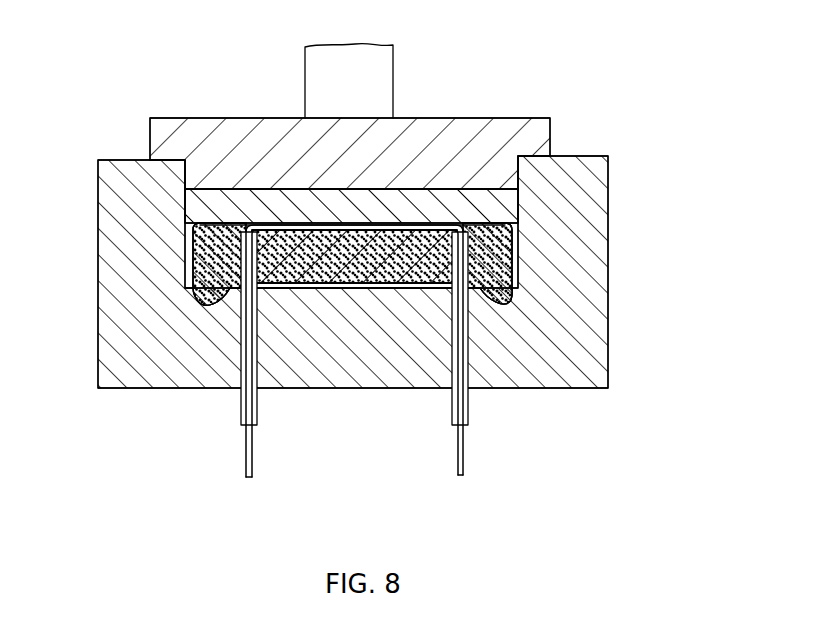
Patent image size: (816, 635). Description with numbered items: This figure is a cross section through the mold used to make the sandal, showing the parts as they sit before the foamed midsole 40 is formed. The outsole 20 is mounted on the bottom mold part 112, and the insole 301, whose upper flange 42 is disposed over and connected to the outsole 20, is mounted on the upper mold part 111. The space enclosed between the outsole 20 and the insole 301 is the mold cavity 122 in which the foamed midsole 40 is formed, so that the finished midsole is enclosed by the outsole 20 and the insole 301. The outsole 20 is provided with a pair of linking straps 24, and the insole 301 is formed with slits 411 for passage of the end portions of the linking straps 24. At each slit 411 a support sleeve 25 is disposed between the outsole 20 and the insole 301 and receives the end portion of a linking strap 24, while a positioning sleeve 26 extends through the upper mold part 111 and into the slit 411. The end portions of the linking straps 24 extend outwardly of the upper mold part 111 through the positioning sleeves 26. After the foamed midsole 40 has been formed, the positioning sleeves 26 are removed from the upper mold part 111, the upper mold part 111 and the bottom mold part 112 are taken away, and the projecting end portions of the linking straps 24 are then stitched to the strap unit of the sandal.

The upper mold part 111 is at (617, 332).
The mold cavity 122 is at (196, 280).
The bottom mold part 112 is at (524, 118).
The outsole 20 is at (457, 187).
The slit 411 is at (233, 290).
The support sleeve 25 is at (197, 253).
The foamed midsole 40 is at (397, 240).
The upper flange 42 is at (516, 230).
The insole 301 is at (357, 287).
The positioning sleeve 26 is at (257, 404).
The linking strap 24 is at (247, 452).